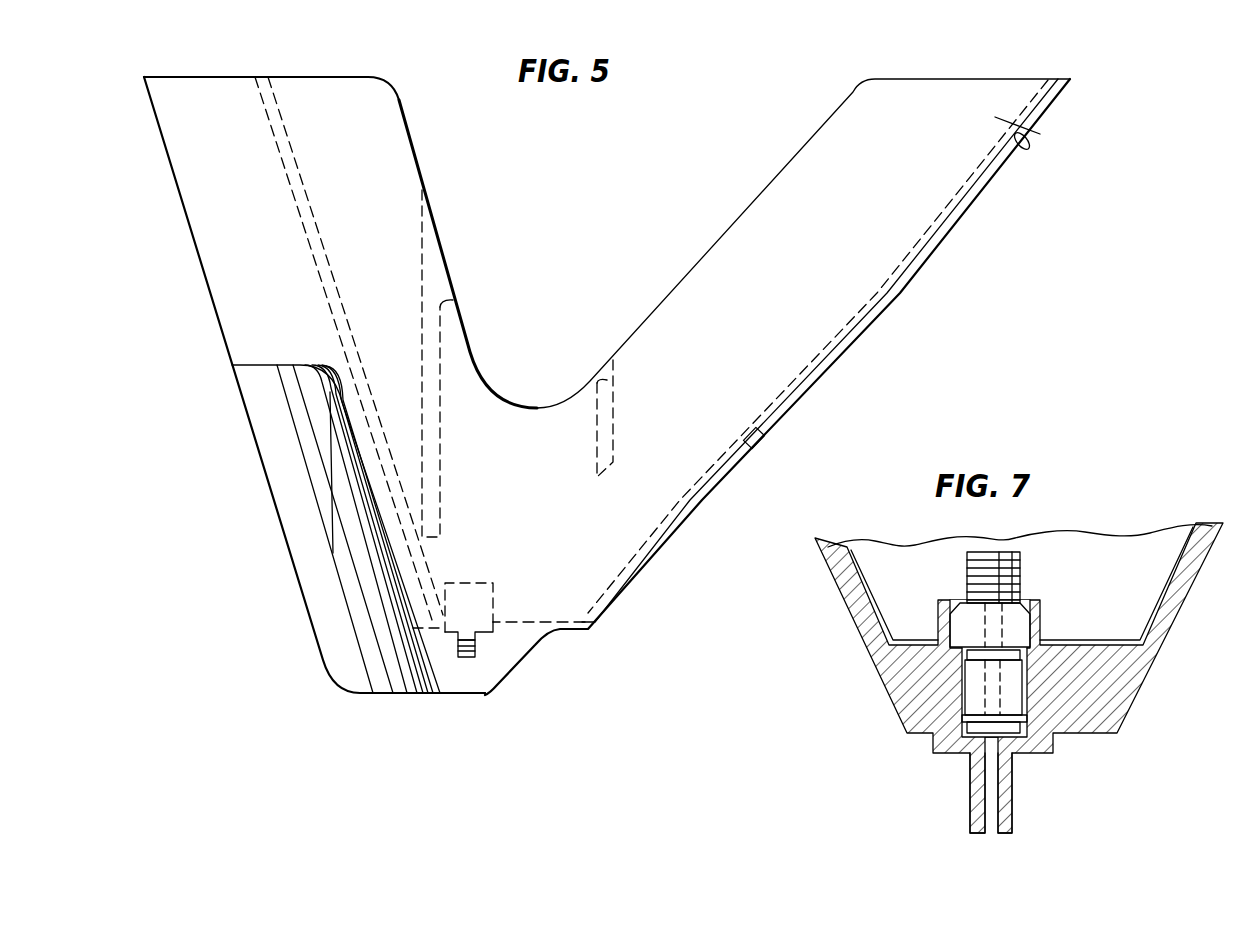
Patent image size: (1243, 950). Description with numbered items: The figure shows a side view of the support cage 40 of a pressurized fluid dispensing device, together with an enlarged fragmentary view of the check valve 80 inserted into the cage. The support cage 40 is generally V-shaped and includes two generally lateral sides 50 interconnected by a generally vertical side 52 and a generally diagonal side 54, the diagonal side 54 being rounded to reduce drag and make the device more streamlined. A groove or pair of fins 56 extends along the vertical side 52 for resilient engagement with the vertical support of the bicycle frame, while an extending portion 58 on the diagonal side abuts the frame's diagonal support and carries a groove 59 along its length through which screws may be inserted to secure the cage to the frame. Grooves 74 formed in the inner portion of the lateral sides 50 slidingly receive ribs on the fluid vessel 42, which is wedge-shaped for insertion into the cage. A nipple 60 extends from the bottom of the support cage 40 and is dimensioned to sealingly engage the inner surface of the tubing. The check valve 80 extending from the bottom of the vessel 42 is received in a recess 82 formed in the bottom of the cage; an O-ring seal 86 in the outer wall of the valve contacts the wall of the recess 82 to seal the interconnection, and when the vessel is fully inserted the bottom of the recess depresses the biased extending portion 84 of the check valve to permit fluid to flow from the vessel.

In FIG. 5, the support cage 40 is at (424, 183).
In FIG. 7, the support cage 40 is at (1138, 710).
In FIG. 7, the fluid vessel 42 is at (1168, 583).
In FIG. 5, the lateral sides 50 is at (543, 408).
In FIG. 5, the vertical side 52 is at (303, 195).
In FIG. 5, the diagonal side 54 is at (1028, 134).
In FIG. 5, the fins 56 is at (224, 342).
In FIG. 5, the extending portion 58 is at (833, 375).
In FIG. 5, the groove 59 is at (772, 440).
In FIG. 5, the nipple 60 is at (485, 695).
In FIG. 7, the nipple 60 is at (1013, 800).
In FIG. 5, the grooves 74 is at (440, 462).
In FIG. 7, the check valve 80 is at (1023, 627).
In FIG. 5, the recess 82 is at (476, 648).
In FIG. 7, the recess 82 is at (1030, 692).
In FIG. 7, the extending portion 84 is at (1024, 700).
In FIG. 7, the O-ring seal 86 is at (962, 713).